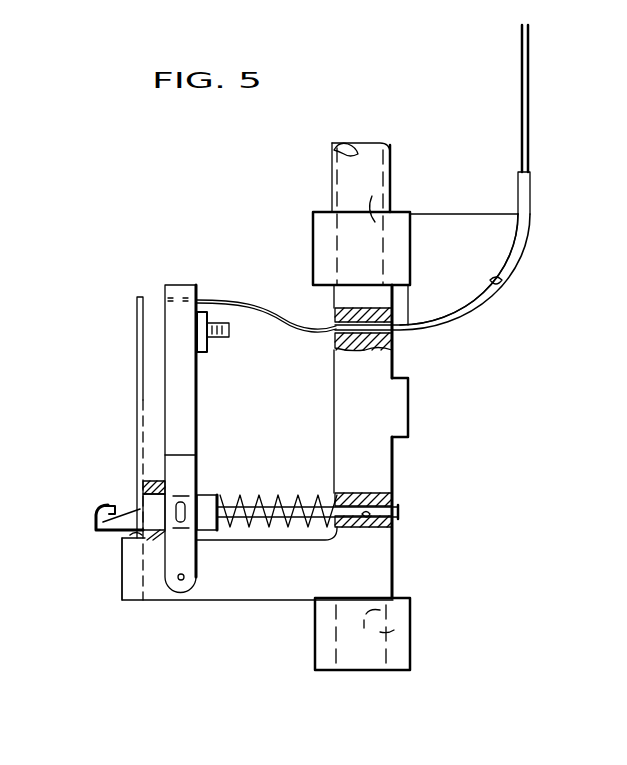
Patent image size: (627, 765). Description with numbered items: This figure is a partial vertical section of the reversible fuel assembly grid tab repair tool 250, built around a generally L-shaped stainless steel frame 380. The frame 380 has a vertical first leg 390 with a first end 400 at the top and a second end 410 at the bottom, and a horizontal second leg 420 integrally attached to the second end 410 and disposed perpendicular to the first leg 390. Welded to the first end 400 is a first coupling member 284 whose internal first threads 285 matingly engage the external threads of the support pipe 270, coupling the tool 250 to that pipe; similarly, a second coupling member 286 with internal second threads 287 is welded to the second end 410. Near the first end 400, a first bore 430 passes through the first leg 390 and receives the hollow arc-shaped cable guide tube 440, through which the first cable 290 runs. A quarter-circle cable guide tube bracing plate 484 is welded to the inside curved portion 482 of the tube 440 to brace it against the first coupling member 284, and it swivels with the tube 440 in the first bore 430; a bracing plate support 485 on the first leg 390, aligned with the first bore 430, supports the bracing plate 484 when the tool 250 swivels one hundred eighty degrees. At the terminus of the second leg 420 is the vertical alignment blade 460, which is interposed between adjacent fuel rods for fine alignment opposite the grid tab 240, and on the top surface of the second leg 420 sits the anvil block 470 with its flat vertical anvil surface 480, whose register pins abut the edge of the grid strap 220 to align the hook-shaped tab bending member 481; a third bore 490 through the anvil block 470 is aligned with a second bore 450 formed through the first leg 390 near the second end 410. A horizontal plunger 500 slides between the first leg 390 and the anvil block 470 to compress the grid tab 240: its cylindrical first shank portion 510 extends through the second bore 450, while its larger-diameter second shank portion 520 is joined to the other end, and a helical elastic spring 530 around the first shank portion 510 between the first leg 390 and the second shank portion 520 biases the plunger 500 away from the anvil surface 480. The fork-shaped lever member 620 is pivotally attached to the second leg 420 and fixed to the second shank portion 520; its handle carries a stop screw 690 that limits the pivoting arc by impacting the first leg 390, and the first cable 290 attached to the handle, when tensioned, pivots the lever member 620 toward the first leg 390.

The reversible fuel assembly grid tab repair tool 250 is at (500, 52).
The first cable 290 is at (529, 68).
The cable guide tube 440 is at (524, 192).
The cable guide tube bracing plate 484 is at (497, 238).
The inside curved portion 482 is at (496, 285).
The support pipe 270 is at (362, 157).
The first threads 285 is at (378, 190).
The first coupling member 284 is at (313, 221).
The first end 400 is at (383, 297).
The first bore 430 is at (338, 336).
The frame 380 is at (410, 367).
The bracing plate support 485 is at (402, 413).
The first leg 390 is at (380, 455).
The first shank portion 510 is at (399, 508).
The second bore 450 is at (366, 517).
The helical elastic spring 530 is at (262, 503).
The second shank portion 520 is at (207, 517).
The plunger 500 is at (240, 484).
The lever member 620 is at (182, 380).
The stop screw 690 is at (218, 325).
The grid strap 220 is at (140, 380).
The anvil block 470 is at (150, 482).
The anvil surface 480 is at (141, 491).
The grid tab 240 is at (120, 500).
The hook-shaped tab bending member 481 is at (94, 516).
The third bore 490 is at (130, 536).
The second leg 420 is at (278, 590).
The alignment blade 460 is at (133, 592).
The second end 410 is at (370, 578).
The second coupling member 286 is at (398, 660).
The second threads 287 is at (410, 622).